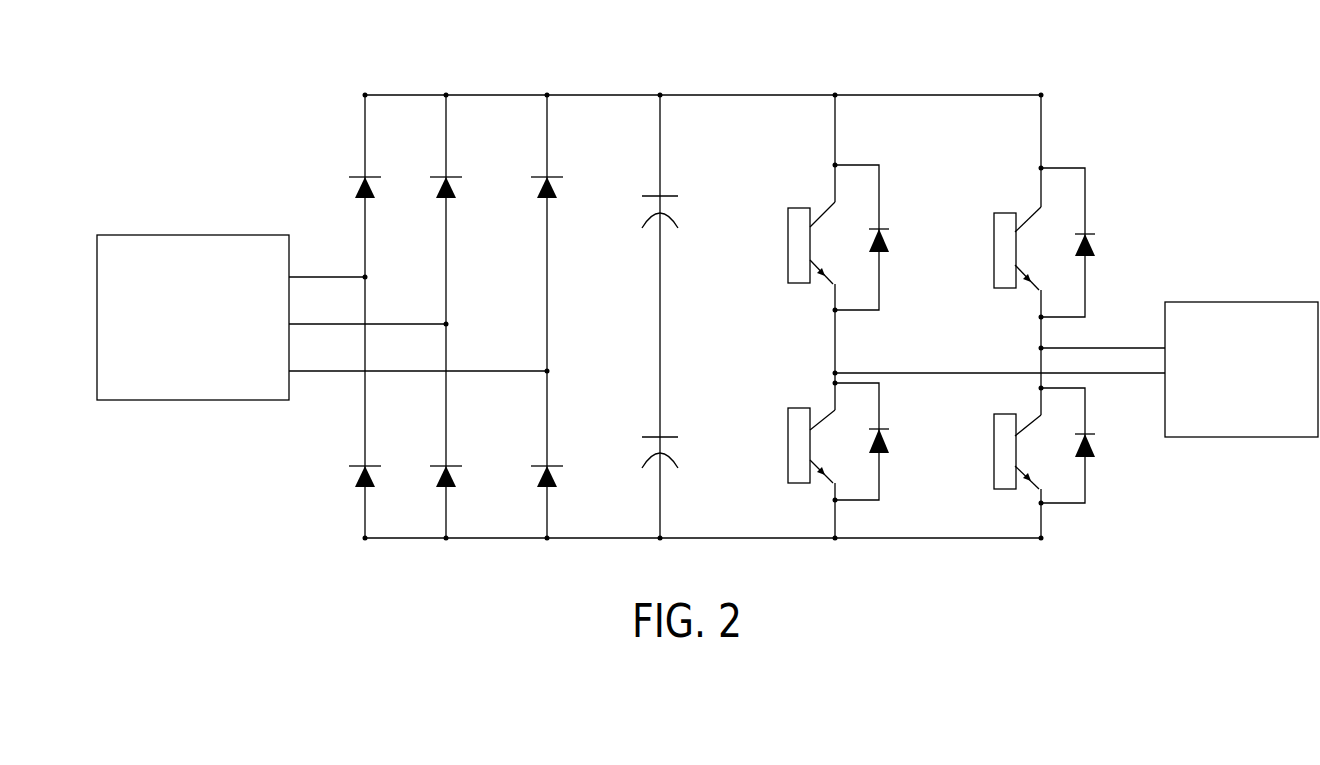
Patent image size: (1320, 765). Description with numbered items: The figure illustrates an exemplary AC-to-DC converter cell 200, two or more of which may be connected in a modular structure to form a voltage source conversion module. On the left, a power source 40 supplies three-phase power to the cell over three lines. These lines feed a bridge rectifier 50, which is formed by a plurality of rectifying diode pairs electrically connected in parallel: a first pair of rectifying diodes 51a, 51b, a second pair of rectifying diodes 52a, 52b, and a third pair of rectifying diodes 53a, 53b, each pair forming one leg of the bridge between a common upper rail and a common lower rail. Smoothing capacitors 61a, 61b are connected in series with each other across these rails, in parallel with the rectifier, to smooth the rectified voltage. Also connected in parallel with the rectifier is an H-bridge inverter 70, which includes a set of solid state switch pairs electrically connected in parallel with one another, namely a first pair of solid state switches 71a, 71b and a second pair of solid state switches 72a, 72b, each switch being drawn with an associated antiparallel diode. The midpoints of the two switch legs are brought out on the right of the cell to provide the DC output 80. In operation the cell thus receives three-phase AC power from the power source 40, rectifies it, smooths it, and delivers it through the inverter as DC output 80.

The AC-to-DC converter cell 200 is at (243, 58).
The power source 40 is at (145, 235).
The bridge rectifier 50 is at (550, 62).
The rectifying diode 51a is at (360, 200).
The rectifying diode 51b is at (358, 480).
The rectifying diode 52a is at (441, 200).
The rectifying diode 52b is at (439, 480).
The rectifying diode 53a is at (542, 200).
The rectifying diode 53b is at (540, 480).
The smoothing capacitor 61a is at (668, 196).
The smoothing capacitor 61b is at (668, 437).
The H-bridge inverter 70 is at (1088, 62).
The solid state switch 71a is at (880, 268).
The solid state switch 71b is at (880, 461).
The solid state switch 72a is at (1086, 200).
The solid state switch 72b is at (1088, 491).
The DC output 80 is at (1272, 302).